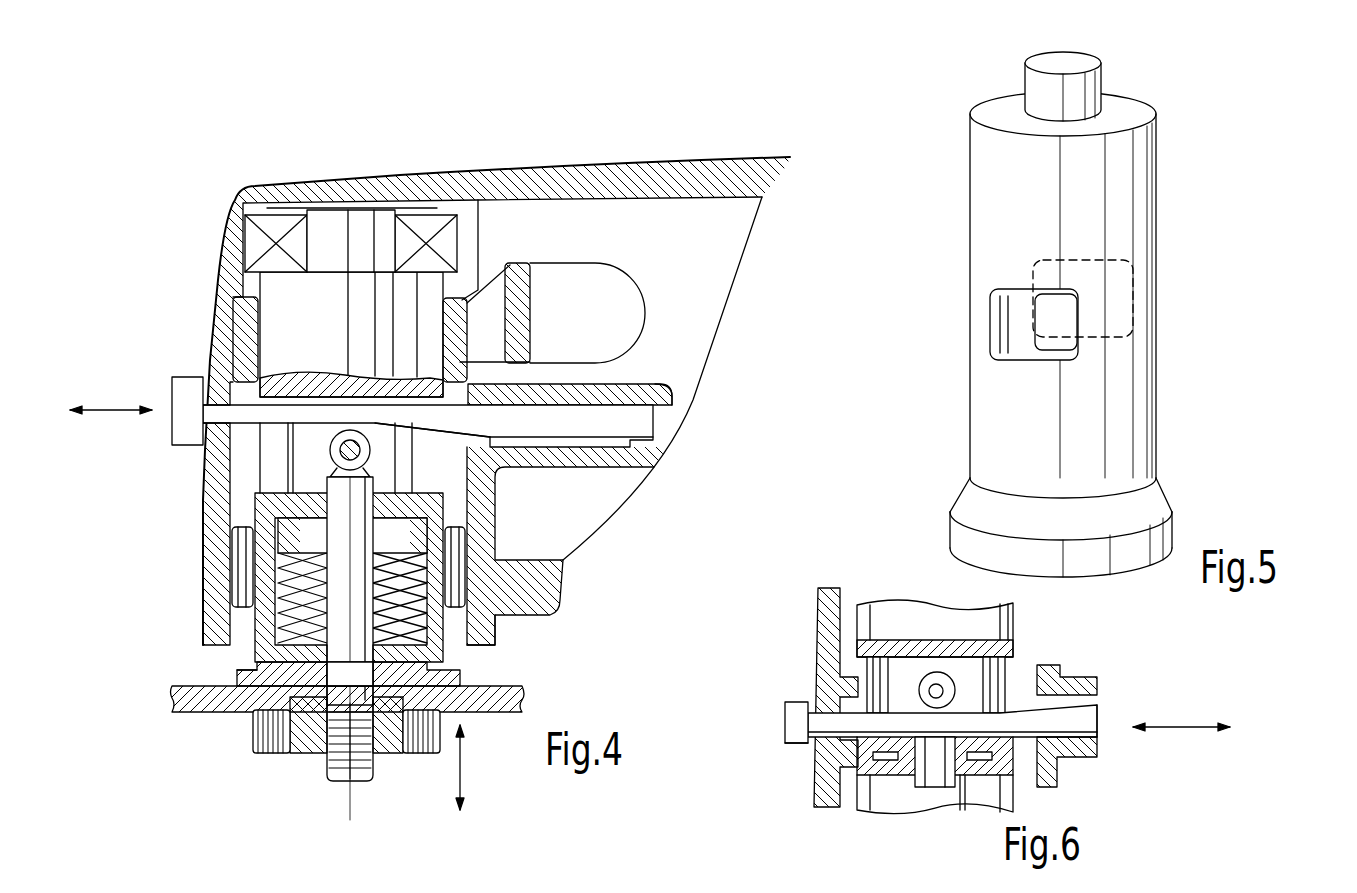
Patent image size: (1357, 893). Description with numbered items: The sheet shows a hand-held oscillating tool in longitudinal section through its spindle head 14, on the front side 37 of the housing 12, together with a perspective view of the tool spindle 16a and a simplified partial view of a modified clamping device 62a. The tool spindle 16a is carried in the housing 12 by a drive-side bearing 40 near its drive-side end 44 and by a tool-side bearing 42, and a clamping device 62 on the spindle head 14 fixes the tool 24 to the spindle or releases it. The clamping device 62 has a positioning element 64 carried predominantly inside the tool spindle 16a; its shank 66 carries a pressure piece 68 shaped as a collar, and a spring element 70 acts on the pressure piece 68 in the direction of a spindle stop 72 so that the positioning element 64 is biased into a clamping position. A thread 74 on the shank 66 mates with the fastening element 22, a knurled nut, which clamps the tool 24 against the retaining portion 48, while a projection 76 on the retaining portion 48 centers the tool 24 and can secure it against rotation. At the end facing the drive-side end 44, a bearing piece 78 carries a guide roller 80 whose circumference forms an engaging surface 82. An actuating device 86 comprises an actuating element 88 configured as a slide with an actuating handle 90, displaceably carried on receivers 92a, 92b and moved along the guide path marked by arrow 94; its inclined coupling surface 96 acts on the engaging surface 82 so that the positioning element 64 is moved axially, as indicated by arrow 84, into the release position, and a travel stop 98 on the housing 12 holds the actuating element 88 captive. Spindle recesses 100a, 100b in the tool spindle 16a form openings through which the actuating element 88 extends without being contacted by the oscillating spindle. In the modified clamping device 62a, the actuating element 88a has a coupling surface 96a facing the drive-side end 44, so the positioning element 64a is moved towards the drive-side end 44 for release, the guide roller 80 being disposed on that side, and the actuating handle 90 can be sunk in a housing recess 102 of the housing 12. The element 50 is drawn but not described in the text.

In FIG. 4, the housing 12 is at (635, 168).
In FIG. 6, the housing 12 is at (825, 780).
In FIG. 4, the spindle head 14 is at (228, 165).
In FIG. 4, the tool spindle 16a is at (245, 500).
In FIG. 5, the tool spindle 16a is at (1163, 168).
In FIG. 6, the tool spindle 16a is at (1020, 787).
In FIG. 4, the fastening element 22 is at (278, 755).
In FIG. 4, the tool 24 is at (200, 700).
In FIG. 4, the front side 37 is at (195, 509).
In FIG. 4, the drive-side bearing 40 is at (422, 228).
In FIG. 4, the tool-side bearing 42 is at (500, 540).
In FIG. 4, the drive-side end 44 is at (333, 178).
In FIG. 4, the retaining portion 48 is at (482, 678).
In FIG. 5, the retaining portion 48 is at (1160, 540).
In FIG. 4, the opening 50 is at (555, 280).
In FIG. 4, the clamping device 62 is at (170, 675).
In FIG. 6, the clamping device 62a is at (1142, 688).
In FIG. 4, the positioning element 64 is at (322, 673).
In FIG. 6, the positioning element 64a is at (928, 760).
In FIG. 4, the shank 66 is at (482, 650).
In FIG. 4, the pressure piece 68 is at (243, 585).
In FIG. 4, the spring element 70 is at (458, 568).
In FIG. 4, the spindle stop 72 is at (330, 537).
In FIG. 4, the thread 74 is at (345, 765).
In FIG. 4, the projection 76 is at (393, 695).
In FIG. 4, the bearing piece 78 is at (233, 373).
In FIG. 4, the guide roller 80 is at (345, 432).
In FIG. 6, the guide roller 80 is at (937, 672).
In FIG. 4, the engaging surface 82 is at (380, 452).
In FIG. 4, the arrow 84 is at (470, 755).
In FIG. 4, the actuating device 86 is at (572, 420).
In FIG. 4, the actuating element 88 is at (645, 395).
In FIG. 6, the actuating element 88a is at (1070, 717).
In FIG. 4, the actuating handle 90 is at (183, 393).
In FIG. 6, the actuating handle 90 is at (797, 705).
In FIG. 4, the receiver 92a is at (205, 445).
In FIG. 4, the receiver 92b is at (668, 393).
In FIG. 4, the arrow 94 is at (113, 410).
In FIG. 6, the arrow 94 is at (1180, 727).
In FIG. 4, the coupling surface 96 is at (600, 450).
In FIG. 6, the coupling surface 96a is at (988, 695).
In FIG. 4, the travel stop 98 is at (675, 183).
In FIG. 5, the spindle recess 100a is at (1048, 315).
In FIG. 5, the spindle recess 100b is at (1003, 330).
In FIG. 6, the housing recess 102 is at (808, 735).